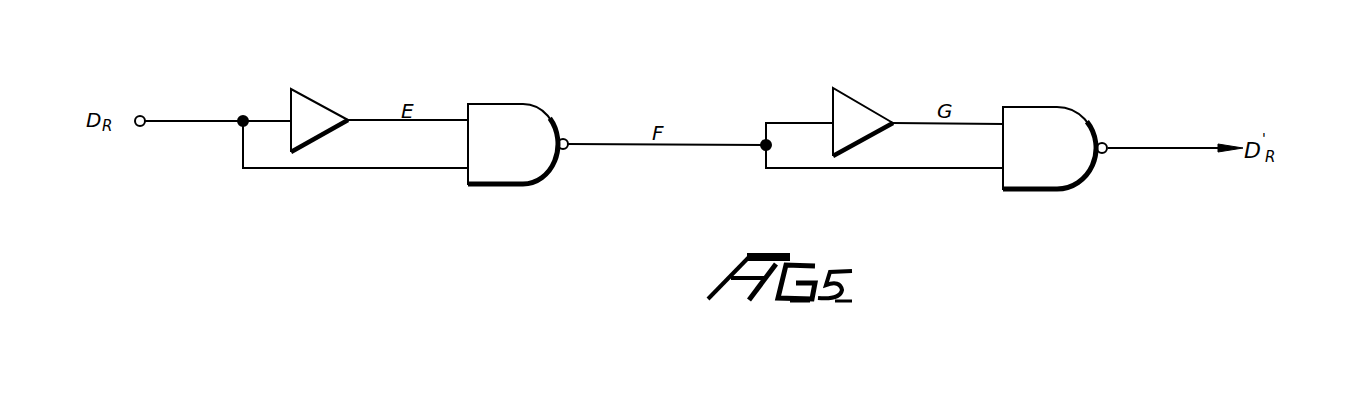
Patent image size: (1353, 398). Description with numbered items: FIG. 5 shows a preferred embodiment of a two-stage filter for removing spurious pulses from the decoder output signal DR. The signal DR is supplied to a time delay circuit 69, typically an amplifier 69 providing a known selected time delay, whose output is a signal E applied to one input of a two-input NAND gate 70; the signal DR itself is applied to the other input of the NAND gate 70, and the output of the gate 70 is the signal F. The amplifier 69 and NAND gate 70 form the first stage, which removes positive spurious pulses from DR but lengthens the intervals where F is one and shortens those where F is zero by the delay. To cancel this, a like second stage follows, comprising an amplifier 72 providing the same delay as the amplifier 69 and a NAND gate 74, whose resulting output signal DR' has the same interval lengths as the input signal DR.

The time delay circuit 69 is at (311, 93).
The NAND gate 70 is at (522, 103).
The amplifier 72 is at (860, 98).
The NAND gate 74 is at (1052, 106).